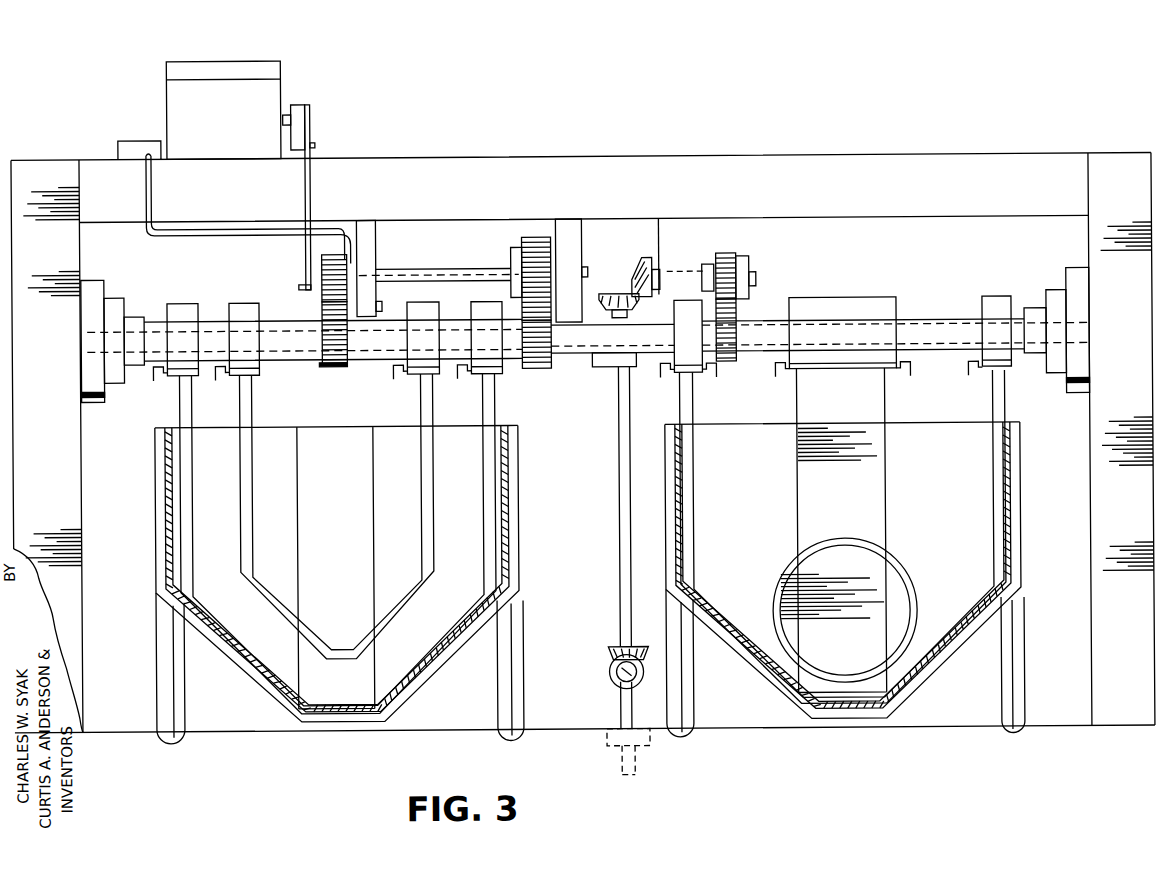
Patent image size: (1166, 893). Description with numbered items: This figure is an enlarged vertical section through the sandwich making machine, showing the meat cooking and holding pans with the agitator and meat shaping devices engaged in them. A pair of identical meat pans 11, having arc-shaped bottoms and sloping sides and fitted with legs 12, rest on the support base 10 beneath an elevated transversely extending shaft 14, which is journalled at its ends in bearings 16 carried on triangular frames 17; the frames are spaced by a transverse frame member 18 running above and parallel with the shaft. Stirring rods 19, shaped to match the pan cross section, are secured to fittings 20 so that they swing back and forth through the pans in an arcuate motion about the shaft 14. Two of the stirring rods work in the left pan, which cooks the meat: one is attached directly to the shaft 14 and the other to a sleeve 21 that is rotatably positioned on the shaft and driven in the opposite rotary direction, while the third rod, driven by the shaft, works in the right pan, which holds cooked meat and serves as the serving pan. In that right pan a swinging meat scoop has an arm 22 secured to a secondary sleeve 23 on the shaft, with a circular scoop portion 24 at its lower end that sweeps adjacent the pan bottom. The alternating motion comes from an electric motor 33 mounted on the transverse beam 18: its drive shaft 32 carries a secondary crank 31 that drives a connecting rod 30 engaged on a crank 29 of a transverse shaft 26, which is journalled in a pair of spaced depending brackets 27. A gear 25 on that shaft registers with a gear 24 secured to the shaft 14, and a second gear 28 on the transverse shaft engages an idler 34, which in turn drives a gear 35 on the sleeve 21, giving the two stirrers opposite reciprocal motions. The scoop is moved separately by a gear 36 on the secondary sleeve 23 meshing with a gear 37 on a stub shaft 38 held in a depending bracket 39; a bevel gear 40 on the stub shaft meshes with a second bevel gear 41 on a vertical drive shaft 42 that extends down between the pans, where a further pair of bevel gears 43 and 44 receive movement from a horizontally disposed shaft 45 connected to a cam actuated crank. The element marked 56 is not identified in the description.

The support base 10 is at (941, 729).
The meat pan 11 is at (248, 670).
The leg 12 is at (162, 690).
The shaft 14 is at (600, 346).
The bearing 16 is at (84, 362).
The triangular frame 17 is at (34, 458).
The transverse frame member 18 is at (949, 156).
The stirring rod 19 is at (186, 418).
The fitting 20 is at (186, 301).
The sleeve 21 is at (273, 346).
The arm 22 is at (890, 482).
The secondary sleeve 23 is at (912, 320).
The scoop portion / gear 24 is at (538, 368).
The gear 25 is at (530, 240).
The shaft 26 is at (445, 272).
The bracket 27 is at (379, 258).
The second gear 28 is at (336, 252).
The crank 29 is at (301, 283).
The connecting rod 30 is at (313, 198).
The secondary crank 31 is at (300, 130).
The drive shaft 32 is at (291, 108).
The electric motor 33 is at (249, 128).
The idler 34 is at (322, 310).
The gear 35 is at (340, 365).
The gear 36 is at (734, 326).
The gear 37 is at (740, 250).
The stub shaft 38 is at (672, 272).
The depending bracket 39 is at (722, 252).
The bevel gear 40 is at (643, 268).
The second bevel gear 41 is at (615, 295).
The vertical drive shaft 42 is at (620, 584).
The bevel gear 43 is at (607, 652).
The bevel gear 44 is at (607, 672).
The horizontally disposed shaft 45 is at (632, 678).
The motor 56 is at (247, 59).